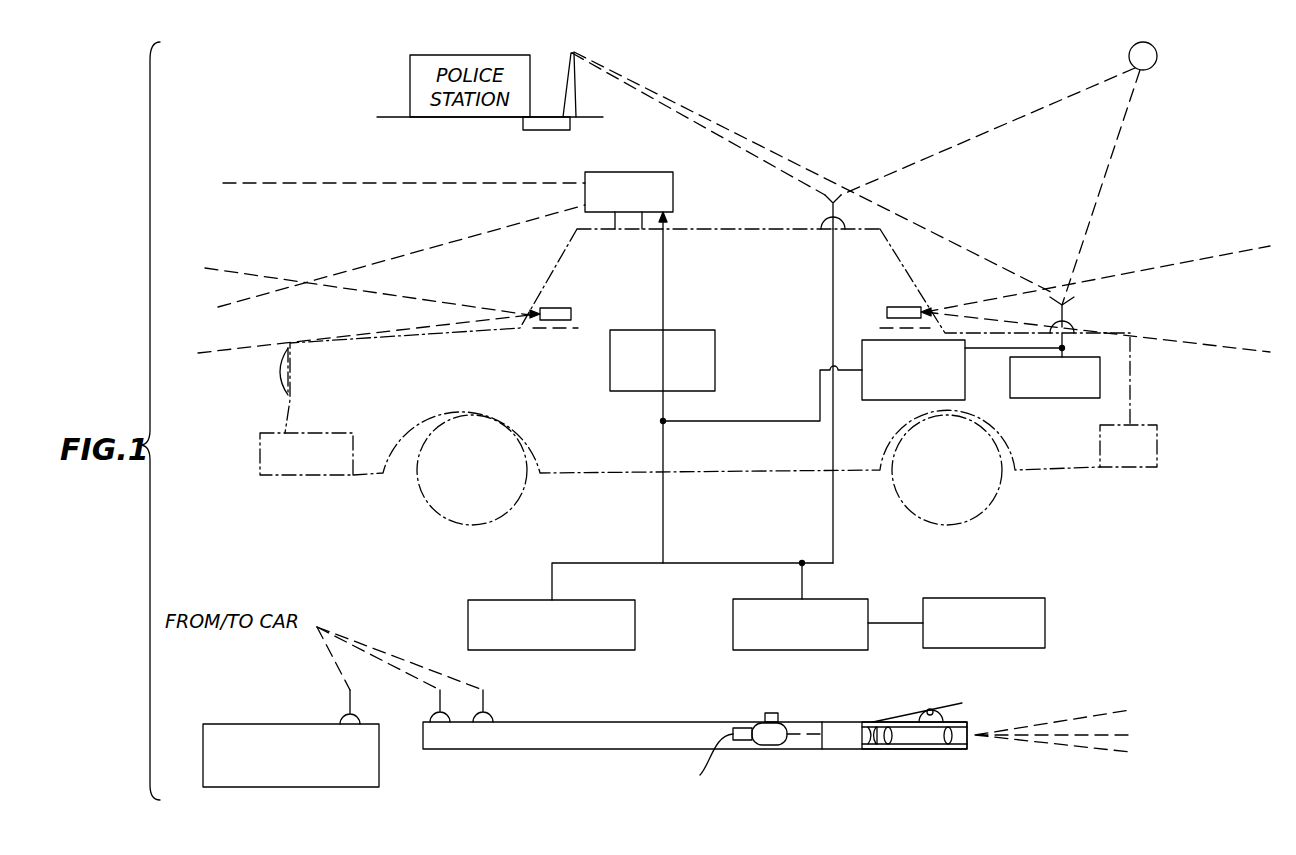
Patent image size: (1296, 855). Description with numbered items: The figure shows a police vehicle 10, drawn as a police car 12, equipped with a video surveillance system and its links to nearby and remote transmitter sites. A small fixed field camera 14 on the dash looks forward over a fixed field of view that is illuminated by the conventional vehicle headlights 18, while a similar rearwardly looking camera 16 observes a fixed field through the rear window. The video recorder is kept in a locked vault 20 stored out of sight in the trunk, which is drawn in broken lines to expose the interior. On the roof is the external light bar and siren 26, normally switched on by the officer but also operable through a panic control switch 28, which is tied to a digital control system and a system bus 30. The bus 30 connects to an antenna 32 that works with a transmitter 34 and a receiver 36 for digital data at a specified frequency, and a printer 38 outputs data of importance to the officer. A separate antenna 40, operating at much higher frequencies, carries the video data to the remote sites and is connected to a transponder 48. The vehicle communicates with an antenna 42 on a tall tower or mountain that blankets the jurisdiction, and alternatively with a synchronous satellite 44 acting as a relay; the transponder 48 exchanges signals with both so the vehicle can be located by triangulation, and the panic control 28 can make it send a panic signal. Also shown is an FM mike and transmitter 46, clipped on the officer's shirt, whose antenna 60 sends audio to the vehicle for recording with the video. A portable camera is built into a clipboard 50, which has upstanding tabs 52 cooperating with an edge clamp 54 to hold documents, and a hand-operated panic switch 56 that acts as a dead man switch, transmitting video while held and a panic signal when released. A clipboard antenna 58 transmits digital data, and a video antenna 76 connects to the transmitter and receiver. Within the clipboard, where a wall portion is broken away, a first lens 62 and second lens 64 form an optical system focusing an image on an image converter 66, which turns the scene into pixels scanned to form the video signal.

The police vehicle 10 is at (533, 284).
The police car 12 is at (353, 477).
The fixed field camera 14 is at (556, 308).
The rearwardly looking camera 16 is at (900, 307).
The vehicle headlights 18 is at (280, 372).
The vault 20 is at (1100, 378).
The light bar and siren 26 is at (673, 192).
The panic control switch 28 is at (715, 352).
The system bus 30 is at (833, 541).
The antenna 32 is at (822, 221).
The transmitter 34 is at (468, 626).
The receiver 36 is at (733, 617).
The printer 38 is at (1045, 618).
The antenna 40 is at (1074, 330).
The antenna tower 42 is at (577, 88).
The synchronous satellite 44 is at (1157, 58).
The FM mike and transmitter 46 is at (238, 724).
The transponder 48 is at (880, 400).
The clipboard 50 is at (530, 764).
The tabs 52 is at (926, 714).
The clamp 54 is at (962, 703).
The panic switch 56 is at (778, 712).
The clipboard antenna 58 is at (440, 700).
The antenna 60 is at (350, 695).
The first lens 62 is at (948, 750).
The second lens 64 is at (892, 738).
The image converter 66 is at (874, 745).
The video antenna 76 is at (483, 698).